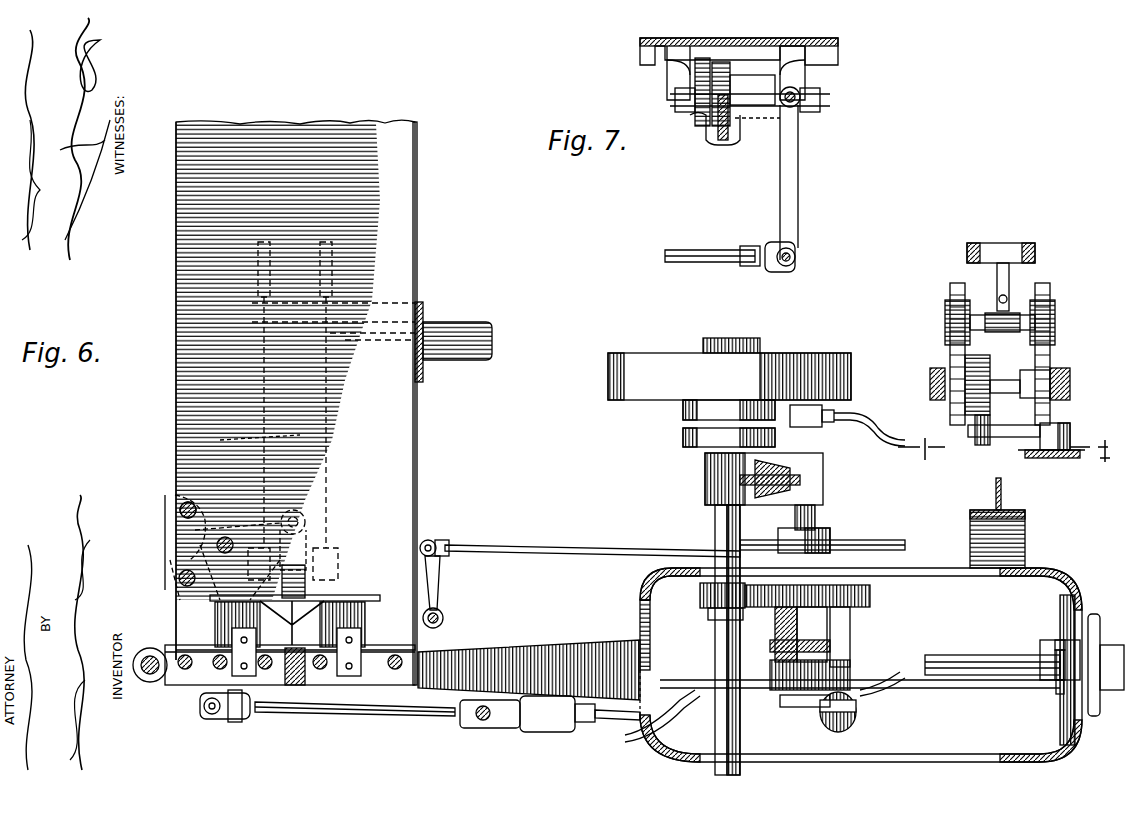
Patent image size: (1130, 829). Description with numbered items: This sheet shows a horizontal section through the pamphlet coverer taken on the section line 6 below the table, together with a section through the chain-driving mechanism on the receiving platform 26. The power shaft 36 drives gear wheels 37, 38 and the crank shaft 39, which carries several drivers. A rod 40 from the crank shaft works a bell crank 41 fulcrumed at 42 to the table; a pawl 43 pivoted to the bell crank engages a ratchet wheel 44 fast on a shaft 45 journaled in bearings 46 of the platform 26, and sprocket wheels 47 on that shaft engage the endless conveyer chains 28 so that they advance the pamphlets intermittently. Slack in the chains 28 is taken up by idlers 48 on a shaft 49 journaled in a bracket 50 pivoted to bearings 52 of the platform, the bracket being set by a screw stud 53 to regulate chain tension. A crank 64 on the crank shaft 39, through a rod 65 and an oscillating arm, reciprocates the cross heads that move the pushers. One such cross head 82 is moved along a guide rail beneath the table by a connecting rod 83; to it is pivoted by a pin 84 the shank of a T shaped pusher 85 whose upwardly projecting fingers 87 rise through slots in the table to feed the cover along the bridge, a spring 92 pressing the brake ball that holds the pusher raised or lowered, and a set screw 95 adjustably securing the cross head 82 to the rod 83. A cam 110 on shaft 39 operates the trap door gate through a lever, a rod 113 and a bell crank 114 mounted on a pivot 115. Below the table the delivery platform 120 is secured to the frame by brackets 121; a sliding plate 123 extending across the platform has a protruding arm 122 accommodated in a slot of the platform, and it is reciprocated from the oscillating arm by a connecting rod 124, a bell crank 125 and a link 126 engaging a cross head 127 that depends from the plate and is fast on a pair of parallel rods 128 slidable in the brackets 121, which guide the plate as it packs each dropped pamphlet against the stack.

In FIG. 6, the section line 6 is at (848, 762).
In FIG. 7, the platform 26 is at (838, 50).
In FIG. 6, the endless conveyer chains 28 is at (950, 352).
In FIG. 7, the endless conveyer chains 28 is at (778, 60).
In FIG. 6, the power shaft 36 is at (715, 528).
In FIG. 6, the gear wheel 37 is at (700, 597).
In FIG. 6, the gear wheel 38 is at (870, 598).
In FIG. 6, the crank shaft 39 is at (815, 518).
In FIG. 6, the rod 40 is at (880, 428).
In FIG. 7, the rod 40 is at (745, 236).
In FIG. 7, the bell crank 41 is at (798, 150).
In FIG. 6, the fulcrum 42 is at (1055, 423).
In FIG. 7, the fulcrum 42 is at (802, 94).
In FIG. 6, the pawl 43 is at (990, 420).
In FIG. 7, the pawl 43 is at (720, 130).
In FIG. 6, the ratchet wheel 44 is at (990, 362).
In FIG. 7, the ratchet wheel 44 is at (695, 82).
In FIG. 7, the shaft 45 is at (760, 78).
In FIG. 7, the bearings 46 is at (700, 126).
In FIG. 7, the sprocket wheels 47 is at (675, 100).
In FIG. 6, the idlers 48 is at (945, 312).
In FIG. 6, the shaft 49 is at (1005, 330).
In FIG. 6, the bracket 50 is at (996, 276).
In FIG. 6, the bearings 52 is at (985, 228).
In FIG. 6, the screw stud 53 is at (1008, 294).
In FIG. 6, the crank 64 is at (856, 712).
In FIG. 6, the rod 65 is at (790, 700).
In FIG. 6, the cross head 82 is at (1062, 688).
In FIG. 6, the connecting rod 83 is at (930, 690).
In FIG. 6, the pin 84 is at (1055, 641).
In FIG. 6, the T shaped pusher 85 is at (1098, 716).
In FIG. 6, the fingers 87 is at (1075, 616).
In FIG. 6, the spring 92 is at (1010, 650).
In FIG. 6, the set screw 95 is at (1055, 695).
In FIG. 6, the cam 110 is at (900, 568).
In FIG. 6, the rod 113 is at (596, 536).
In FIG. 6, the bell crank 114 is at (440, 592).
In FIG. 6, the pivot 115 is at (443, 620).
In FIG. 6, the delivery platform 120 is at (384, 384).
In FIG. 6, the brackets 121 is at (486, 340).
In FIG. 6, the protruding arm 122 is at (300, 690).
In FIG. 6, the sliding plate 123 is at (380, 598).
In FIG. 6, the connecting rod 124 is at (420, 717).
In FIG. 6, the bell crank 125 is at (175, 590).
In FIG. 6, the link 126 is at (308, 530).
In FIG. 6, the cross head 127 is at (307, 575).
In FIG. 6, the parallel rods 128 is at (300, 435).